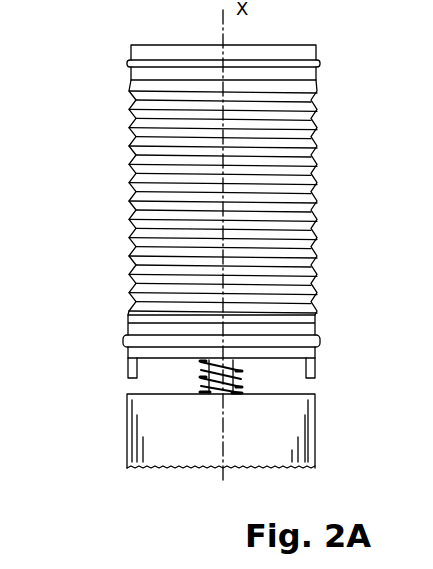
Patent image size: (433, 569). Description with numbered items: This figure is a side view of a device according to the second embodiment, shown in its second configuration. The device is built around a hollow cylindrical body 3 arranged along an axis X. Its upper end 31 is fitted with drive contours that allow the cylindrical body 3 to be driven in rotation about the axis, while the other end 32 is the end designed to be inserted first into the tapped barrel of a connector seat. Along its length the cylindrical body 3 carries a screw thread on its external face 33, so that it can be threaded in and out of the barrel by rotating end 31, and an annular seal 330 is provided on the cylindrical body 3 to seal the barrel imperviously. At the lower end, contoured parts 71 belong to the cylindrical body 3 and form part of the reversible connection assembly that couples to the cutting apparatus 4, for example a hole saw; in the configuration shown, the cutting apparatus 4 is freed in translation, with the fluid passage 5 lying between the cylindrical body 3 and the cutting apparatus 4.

The hollow cylindrical body 3 is at (182, 187).
The end 31 is at (150, 43).
The other end 32 is at (128, 352).
The external face 33 is at (129, 191).
The annular seal 330 is at (127, 337).
The complementary contoured part 71 is at (122, 374).
The fluid passage 5 is at (130, 388).
The cutting apparatus 4 is at (126, 443).